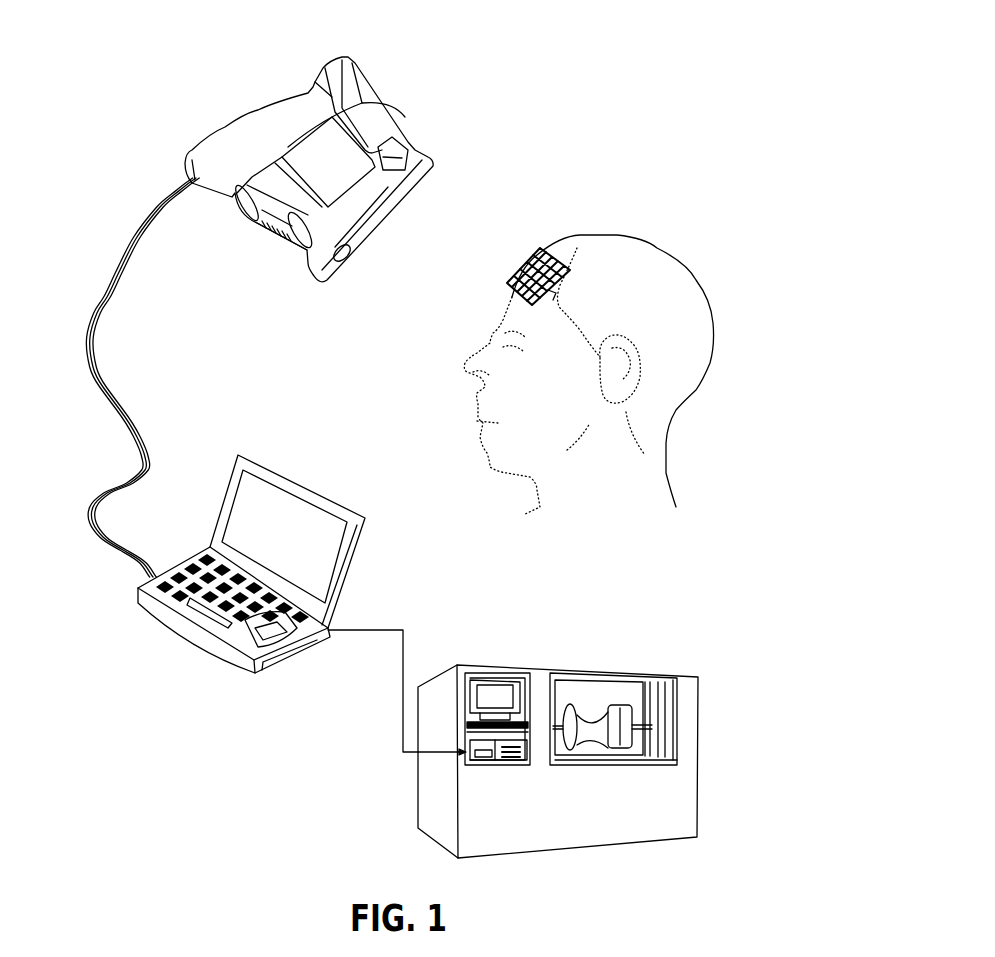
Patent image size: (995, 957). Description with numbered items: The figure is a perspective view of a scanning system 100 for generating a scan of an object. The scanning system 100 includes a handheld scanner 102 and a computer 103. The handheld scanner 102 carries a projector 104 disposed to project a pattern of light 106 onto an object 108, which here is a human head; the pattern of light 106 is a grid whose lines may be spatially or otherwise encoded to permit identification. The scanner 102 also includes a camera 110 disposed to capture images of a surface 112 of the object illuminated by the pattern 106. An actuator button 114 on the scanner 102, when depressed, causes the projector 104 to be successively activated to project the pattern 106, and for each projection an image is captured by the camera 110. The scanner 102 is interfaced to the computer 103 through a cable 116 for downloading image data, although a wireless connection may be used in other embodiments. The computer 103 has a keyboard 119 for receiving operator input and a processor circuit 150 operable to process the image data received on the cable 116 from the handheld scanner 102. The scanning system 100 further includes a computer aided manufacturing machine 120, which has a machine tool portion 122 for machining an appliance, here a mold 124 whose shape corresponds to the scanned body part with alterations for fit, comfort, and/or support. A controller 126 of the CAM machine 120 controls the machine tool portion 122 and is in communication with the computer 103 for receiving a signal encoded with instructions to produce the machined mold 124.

The scanning system 100 is at (121, 52).
The handheld scanner 102 is at (295, 100).
The computer 103 is at (302, 487).
The projector 104 is at (342, 262).
The pattern of light 106 is at (528, 258).
The object 108 is at (620, 240).
The camera 110 is at (418, 184).
The surface 112 is at (532, 308).
The actuator button 114 is at (365, 120).
The cable 116 is at (113, 292).
The keyboard 119 is at (200, 603).
The computer aided manufacturing (CAM) machine 120 is at (672, 648).
The machine tool portion 122 is at (590, 700).
The mold 124 is at (600, 712).
The controller 126 is at (483, 763).
The processor circuit 150 is at (276, 628).